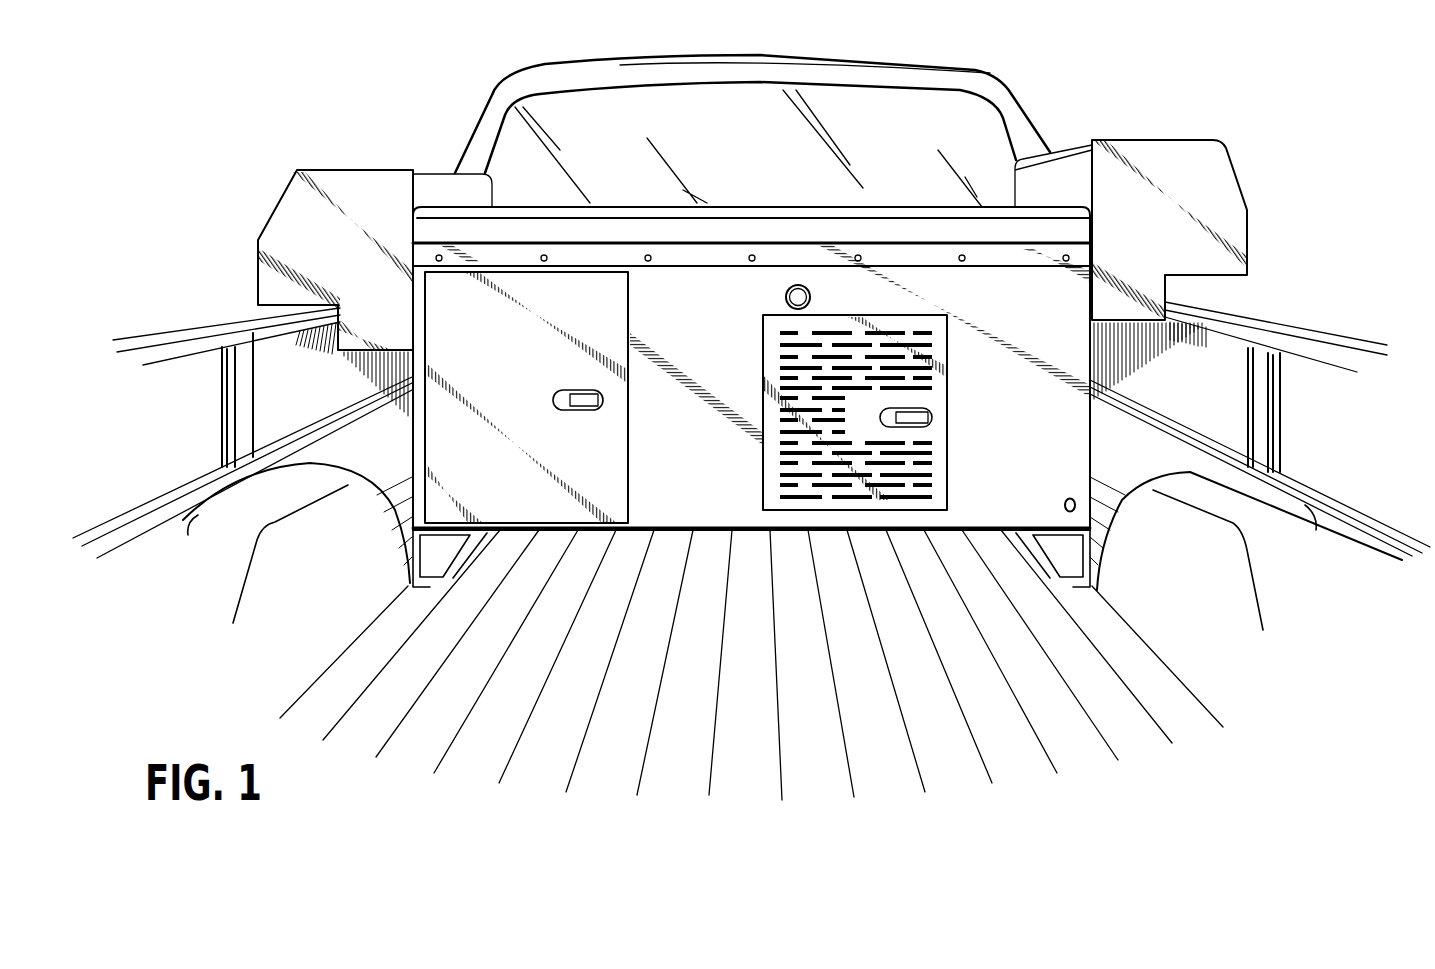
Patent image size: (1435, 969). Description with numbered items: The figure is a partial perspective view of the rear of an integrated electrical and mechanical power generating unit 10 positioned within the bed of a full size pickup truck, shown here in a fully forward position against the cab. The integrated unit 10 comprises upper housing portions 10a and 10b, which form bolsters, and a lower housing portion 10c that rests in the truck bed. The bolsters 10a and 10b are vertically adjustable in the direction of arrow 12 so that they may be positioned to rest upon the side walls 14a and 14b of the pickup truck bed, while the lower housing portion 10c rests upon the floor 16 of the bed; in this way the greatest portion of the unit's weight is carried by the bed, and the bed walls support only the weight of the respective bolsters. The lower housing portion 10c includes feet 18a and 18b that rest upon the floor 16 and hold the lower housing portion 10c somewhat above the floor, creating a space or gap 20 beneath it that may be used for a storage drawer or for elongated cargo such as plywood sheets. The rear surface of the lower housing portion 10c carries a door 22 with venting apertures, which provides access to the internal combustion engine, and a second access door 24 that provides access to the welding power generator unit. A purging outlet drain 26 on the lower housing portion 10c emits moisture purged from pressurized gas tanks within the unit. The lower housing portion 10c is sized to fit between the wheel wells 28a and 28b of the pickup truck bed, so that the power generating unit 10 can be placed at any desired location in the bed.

The integrated unit 10 is at (758, 317).
The upper housing portion 10a is at (297, 170).
The upper housing portion 10b is at (1214, 146).
The lower housing portion 10c is at (1047, 326).
The arrow 12 is at (751, 427).
The side wall 14a is at (227, 324).
The side wall 14b is at (1262, 328).
The floor 16 is at (700, 741).
The foot 18a is at (418, 590).
The foot 18b is at (1082, 592).
The gap 20 is at (900, 543).
The door 22 is at (947, 427).
The second access door 24 is at (630, 302).
The purging outlet drain 26 is at (1065, 503).
The wheel well 28a is at (307, 614).
The wheel well 28b is at (1225, 632).